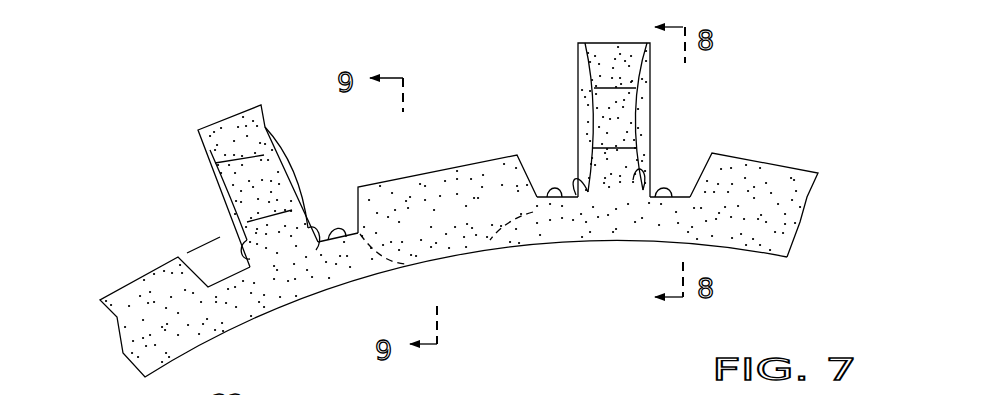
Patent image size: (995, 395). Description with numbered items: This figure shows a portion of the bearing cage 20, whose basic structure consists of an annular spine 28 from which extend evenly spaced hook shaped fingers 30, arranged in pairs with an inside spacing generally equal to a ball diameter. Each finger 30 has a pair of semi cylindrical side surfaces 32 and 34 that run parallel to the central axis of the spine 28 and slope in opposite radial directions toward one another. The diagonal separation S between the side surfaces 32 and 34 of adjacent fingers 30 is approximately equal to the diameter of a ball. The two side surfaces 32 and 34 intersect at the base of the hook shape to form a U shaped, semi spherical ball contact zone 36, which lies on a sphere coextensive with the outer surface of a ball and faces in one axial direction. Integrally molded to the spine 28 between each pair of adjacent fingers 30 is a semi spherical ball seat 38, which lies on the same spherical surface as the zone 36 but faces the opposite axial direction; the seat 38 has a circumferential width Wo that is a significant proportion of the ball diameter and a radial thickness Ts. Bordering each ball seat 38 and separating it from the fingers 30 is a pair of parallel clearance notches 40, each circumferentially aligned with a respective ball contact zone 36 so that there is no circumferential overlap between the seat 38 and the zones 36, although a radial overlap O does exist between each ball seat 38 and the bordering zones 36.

The cage 20 is at (775, 160).
The annular spine 28 is at (757, 244).
The hook shaped finger 30 is at (229, 111).
The side surface 32 is at (268, 118).
The side surface 34 is at (248, 250).
The ball contact zone 36 is at (279, 178).
The ball seat 38 is at (492, 246).
The clearance notch 40 is at (342, 242).
The diagonal separation S is at (586, 157).
The circumferential width Wo is at (536, 197).
The radial thickness Ts is at (151, 275).
The radial overlap O is at (203, 213).